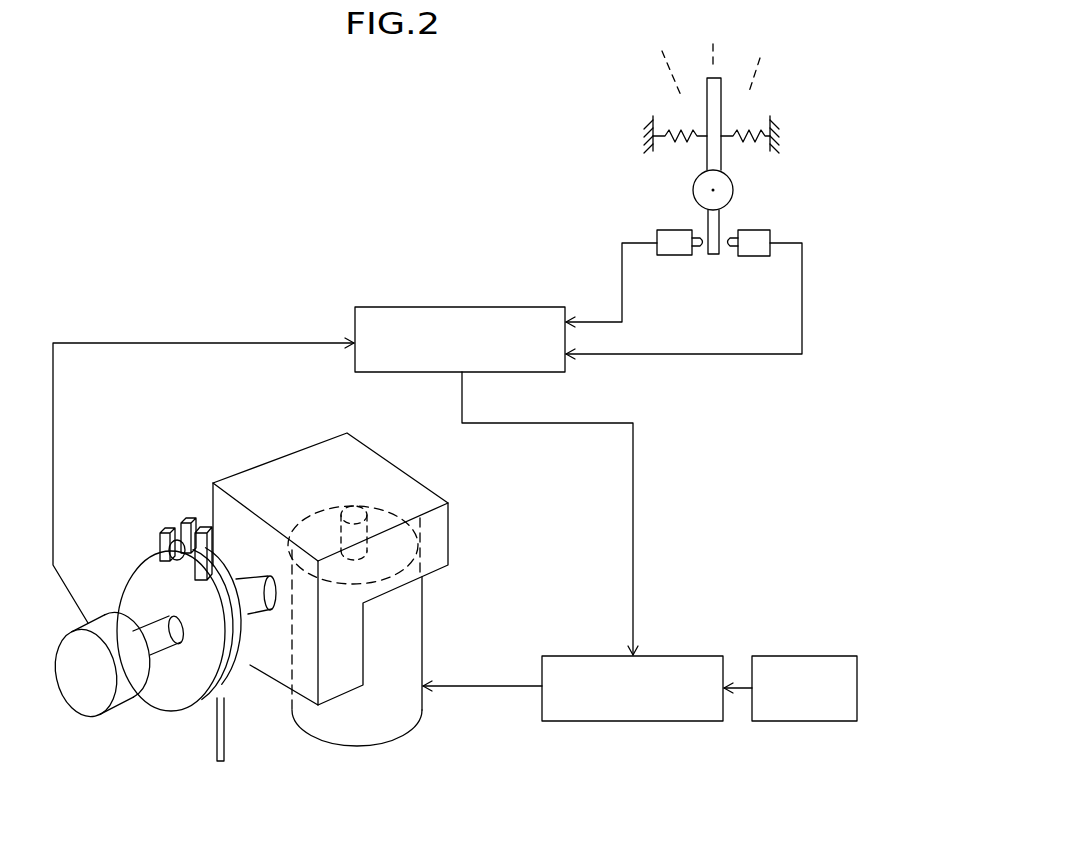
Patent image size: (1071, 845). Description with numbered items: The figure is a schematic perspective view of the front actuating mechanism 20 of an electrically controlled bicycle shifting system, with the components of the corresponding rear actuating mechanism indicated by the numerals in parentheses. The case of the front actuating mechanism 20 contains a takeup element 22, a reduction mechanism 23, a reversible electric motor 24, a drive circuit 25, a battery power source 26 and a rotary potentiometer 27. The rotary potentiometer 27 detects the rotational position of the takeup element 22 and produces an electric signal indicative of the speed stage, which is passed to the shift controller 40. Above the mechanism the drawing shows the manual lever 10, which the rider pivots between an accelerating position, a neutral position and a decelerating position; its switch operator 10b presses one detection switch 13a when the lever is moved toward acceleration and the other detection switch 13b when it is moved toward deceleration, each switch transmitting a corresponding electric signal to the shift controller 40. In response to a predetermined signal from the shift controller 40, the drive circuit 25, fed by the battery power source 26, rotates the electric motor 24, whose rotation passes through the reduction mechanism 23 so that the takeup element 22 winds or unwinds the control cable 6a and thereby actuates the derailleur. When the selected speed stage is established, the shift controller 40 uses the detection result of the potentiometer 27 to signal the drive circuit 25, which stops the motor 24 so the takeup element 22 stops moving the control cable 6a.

The manual lever 10 is at (720, 113).
The switch operator 10b is at (713, 258).
The detection switch 13a is at (766, 233).
The detection switch 13b is at (670, 238).
The shift controller 40 is at (505, 308).
The front actuating mechanism 20 is at (154, 451).
The takeup element 22 is at (126, 575).
The reduction mechanism 23 is at (236, 479).
The reversible electric motor 24 is at (424, 626).
The drive circuit 25 is at (668, 657).
The battery power source 26 is at (773, 657).
The rotary potentiometer 27 is at (106, 714).
The control cable 6a is at (227, 725).